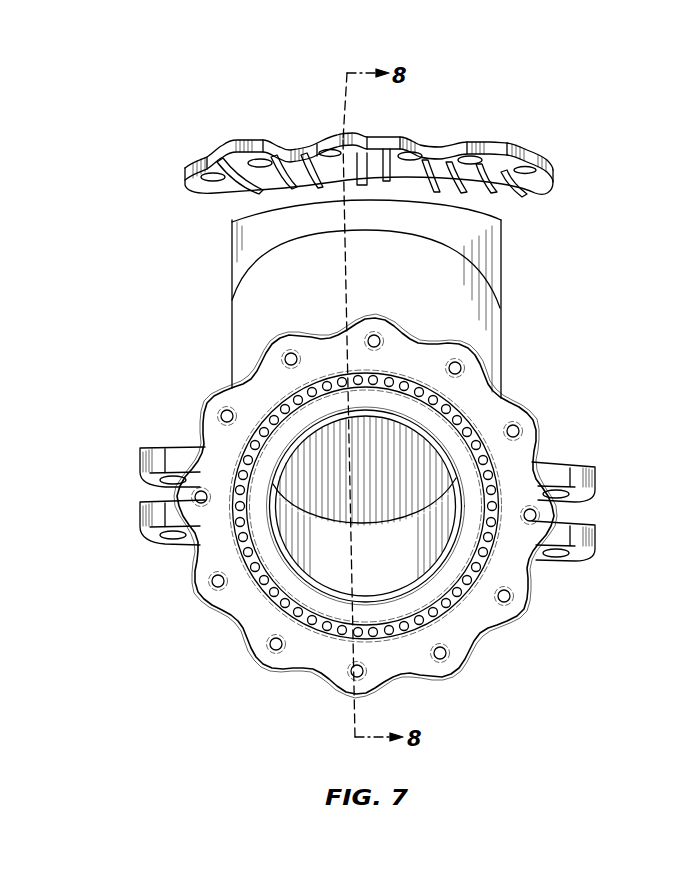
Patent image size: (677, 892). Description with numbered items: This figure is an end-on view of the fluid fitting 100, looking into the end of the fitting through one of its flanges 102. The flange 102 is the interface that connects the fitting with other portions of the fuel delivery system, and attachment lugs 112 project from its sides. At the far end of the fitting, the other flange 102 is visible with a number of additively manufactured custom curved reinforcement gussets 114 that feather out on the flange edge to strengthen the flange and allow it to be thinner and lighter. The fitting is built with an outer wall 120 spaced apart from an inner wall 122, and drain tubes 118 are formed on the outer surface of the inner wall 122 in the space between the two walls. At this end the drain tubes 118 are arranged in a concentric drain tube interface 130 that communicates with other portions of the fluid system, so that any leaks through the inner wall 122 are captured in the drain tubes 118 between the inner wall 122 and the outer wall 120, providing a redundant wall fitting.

The fluid fitting 100 is at (198, 127).
The flange 102 is at (198, 166).
The attachment lugs 112 is at (142, 522).
The curved reinforcement gussets 114 is at (250, 188).
The drain tubes 118 is at (258, 430).
The outer wall 120 is at (488, 242).
The inner wall 122 is at (333, 568).
The concentric drain tube interface 130 is at (323, 633).